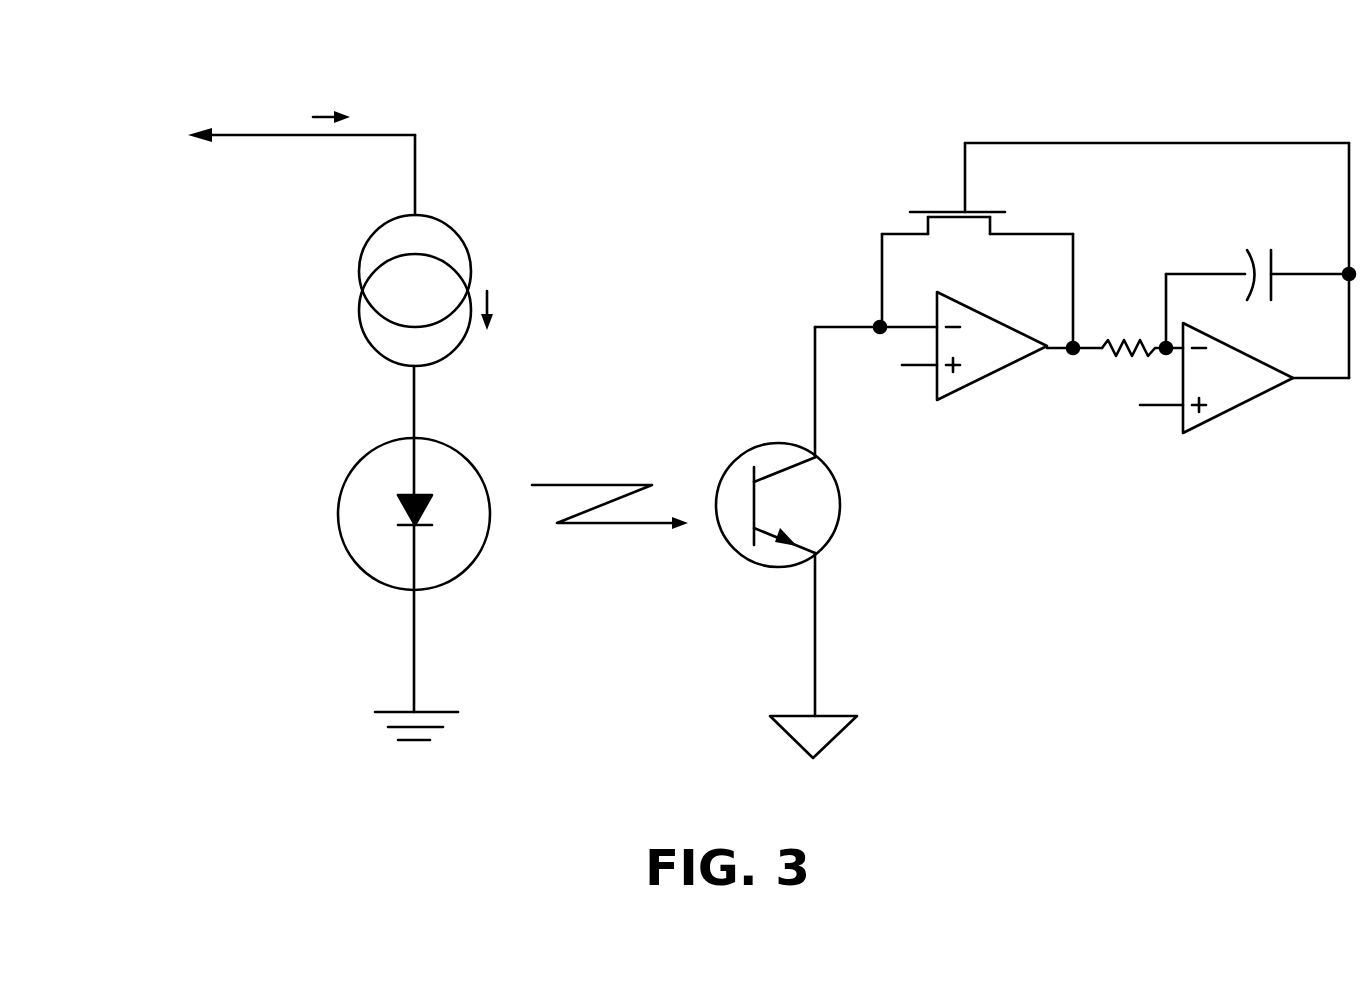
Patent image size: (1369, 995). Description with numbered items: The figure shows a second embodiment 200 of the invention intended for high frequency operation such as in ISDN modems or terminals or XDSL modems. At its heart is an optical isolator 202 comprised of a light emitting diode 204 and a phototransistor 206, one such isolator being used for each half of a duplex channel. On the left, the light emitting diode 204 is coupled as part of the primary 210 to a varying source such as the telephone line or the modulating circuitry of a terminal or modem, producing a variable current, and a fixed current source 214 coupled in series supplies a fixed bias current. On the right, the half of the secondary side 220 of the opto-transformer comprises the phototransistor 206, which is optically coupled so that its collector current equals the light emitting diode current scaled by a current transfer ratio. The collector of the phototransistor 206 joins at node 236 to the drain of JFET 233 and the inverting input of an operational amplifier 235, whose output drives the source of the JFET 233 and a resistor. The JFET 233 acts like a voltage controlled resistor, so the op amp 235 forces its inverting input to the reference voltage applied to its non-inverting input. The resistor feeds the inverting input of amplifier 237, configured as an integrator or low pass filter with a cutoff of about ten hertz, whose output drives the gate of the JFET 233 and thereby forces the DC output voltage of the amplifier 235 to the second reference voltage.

The second embodiment 200 is at (690, 50).
The primary 210 is at (446, 152).
The fixed current source 214 is at (362, 330).
The light emitting diode 204 is at (368, 571).
The optical isolator 202 is at (530, 618).
The phototransistor 206 is at (756, 562).
The secondary side 220 is at (797, 318).
The summing node 236 is at (877, 322).
The JFET 233 is at (986, 212).
The operational amplifier 235 is at (973, 383).
The amplifier 237 is at (1237, 408).